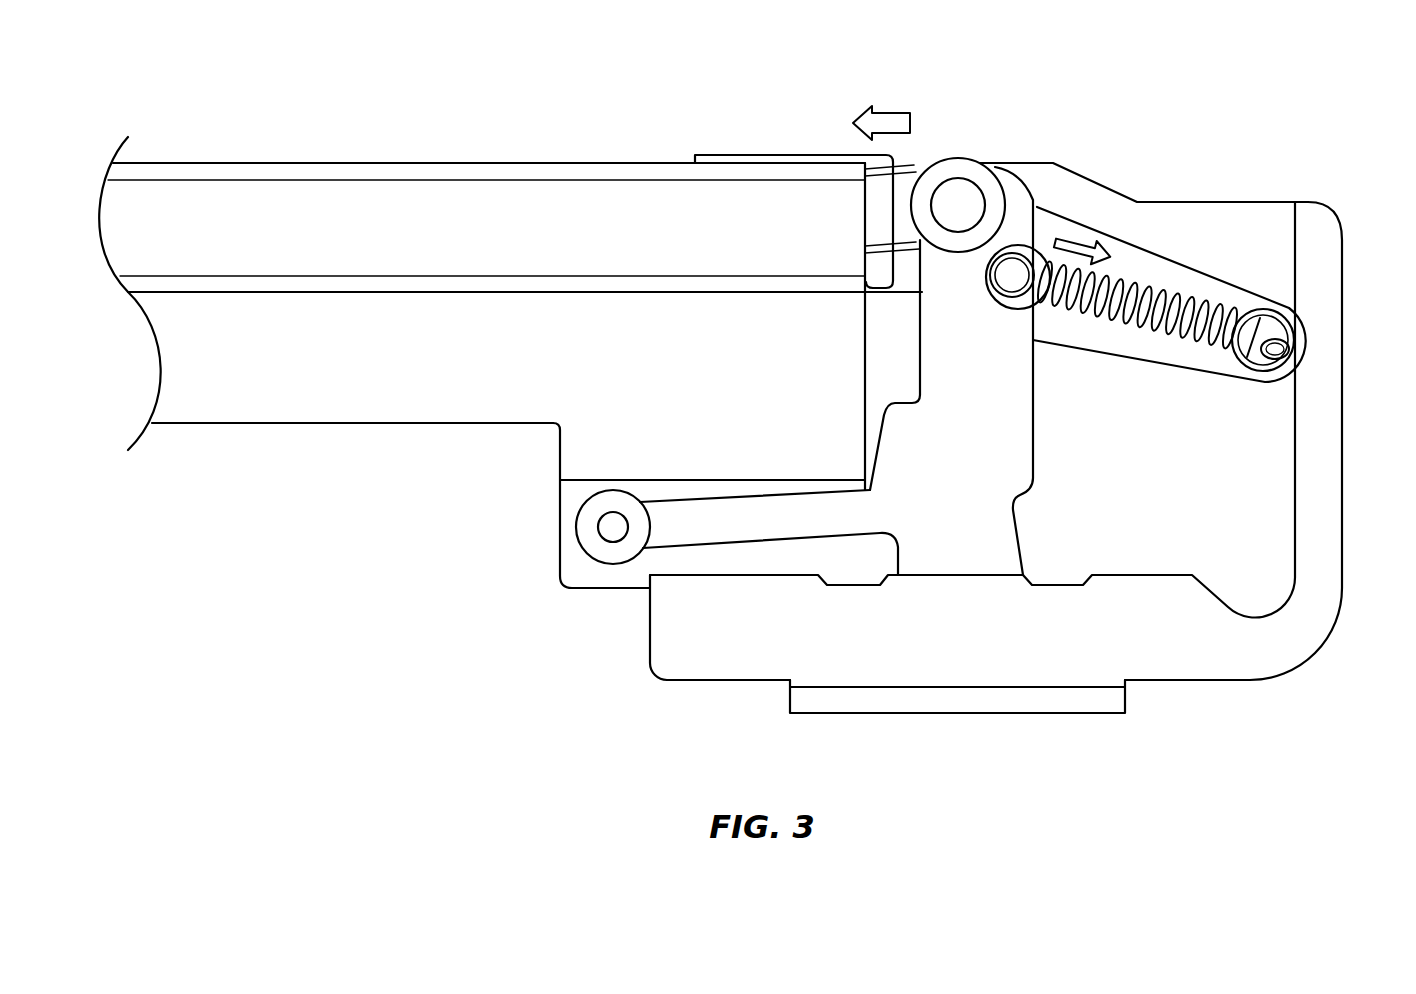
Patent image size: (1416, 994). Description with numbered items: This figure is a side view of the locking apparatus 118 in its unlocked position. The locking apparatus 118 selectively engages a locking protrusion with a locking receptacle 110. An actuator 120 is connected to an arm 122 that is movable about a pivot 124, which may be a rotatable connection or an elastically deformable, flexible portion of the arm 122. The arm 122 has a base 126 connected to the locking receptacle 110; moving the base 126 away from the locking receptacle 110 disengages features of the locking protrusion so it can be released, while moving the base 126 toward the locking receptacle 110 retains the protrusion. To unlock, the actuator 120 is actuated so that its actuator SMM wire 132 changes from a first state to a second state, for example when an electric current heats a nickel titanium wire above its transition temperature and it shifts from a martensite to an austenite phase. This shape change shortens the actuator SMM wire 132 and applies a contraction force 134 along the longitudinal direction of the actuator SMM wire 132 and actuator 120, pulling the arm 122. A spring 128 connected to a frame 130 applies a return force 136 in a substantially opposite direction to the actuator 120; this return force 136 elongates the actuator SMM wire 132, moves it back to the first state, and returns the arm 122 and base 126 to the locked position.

The locking receptacle 110 is at (1125, 703).
The locking apparatus 118 is at (1334, 84).
The actuator 120 is at (458, 163).
The arm 122 is at (1027, 180).
The pivot 124 is at (612, 527).
The base 126 is at (1028, 562).
The spring 128 is at (1163, 290).
The frame 130 is at (1333, 220).
The actuator SMM wire 132 is at (902, 163).
The contraction force 134 is at (903, 113).
The return force 136 is at (1090, 237).